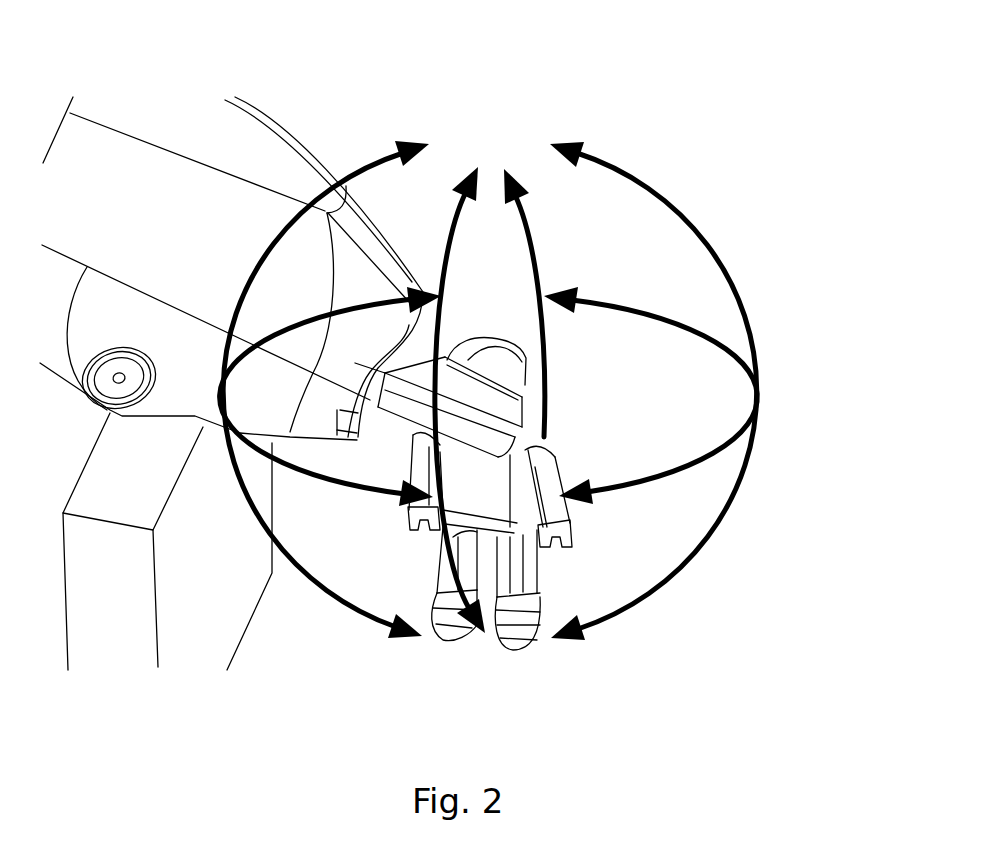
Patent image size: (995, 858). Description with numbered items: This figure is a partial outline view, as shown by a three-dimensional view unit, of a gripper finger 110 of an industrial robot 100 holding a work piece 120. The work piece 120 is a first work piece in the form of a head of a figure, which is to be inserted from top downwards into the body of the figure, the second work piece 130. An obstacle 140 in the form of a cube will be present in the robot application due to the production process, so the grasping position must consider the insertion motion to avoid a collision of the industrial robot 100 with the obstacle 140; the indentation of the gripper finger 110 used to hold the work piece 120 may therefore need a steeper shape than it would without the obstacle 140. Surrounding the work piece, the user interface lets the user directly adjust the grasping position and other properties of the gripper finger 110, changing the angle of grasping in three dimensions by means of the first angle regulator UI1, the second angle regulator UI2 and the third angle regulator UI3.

The industrial robot 100 is at (268, 143).
The gripper finger 110 is at (467, 333).
The work piece 120 is at (530, 355).
The second work piece 130 is at (522, 543).
The obstacle 140 is at (205, 592).
The first angle regulator UI1 is at (505, 165).
The second angle regulator UI2 is at (663, 193).
The third angle regulator UI3 is at (647, 313).